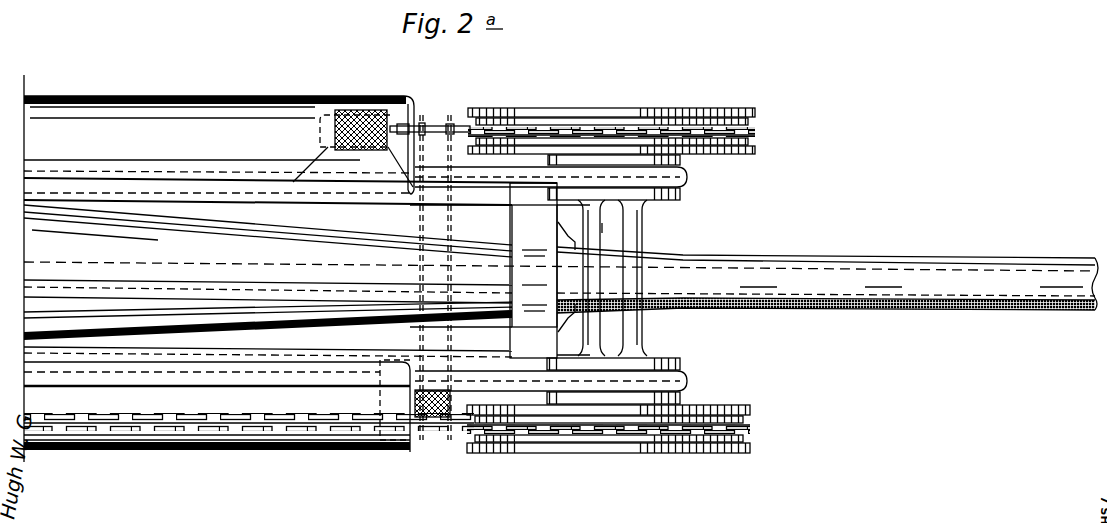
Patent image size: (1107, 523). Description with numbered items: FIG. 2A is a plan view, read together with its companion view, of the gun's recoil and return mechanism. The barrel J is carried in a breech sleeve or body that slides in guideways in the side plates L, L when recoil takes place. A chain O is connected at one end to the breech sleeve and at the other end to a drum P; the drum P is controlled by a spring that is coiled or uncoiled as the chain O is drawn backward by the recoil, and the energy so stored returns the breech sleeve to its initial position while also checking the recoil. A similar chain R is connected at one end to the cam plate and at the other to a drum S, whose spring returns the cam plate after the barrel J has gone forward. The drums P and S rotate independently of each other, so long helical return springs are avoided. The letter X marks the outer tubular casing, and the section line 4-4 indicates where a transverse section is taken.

The outer tubular casing X is at (135, 118).
The barrel J is at (736, 238).
The chain O is at (448, 123).
The drum P is at (730, 108).
The side plates L is at (677, 385).
The drum S is at (720, 453).
The chain R is at (437, 433).
The section line 4- 4 is at (650, 91).